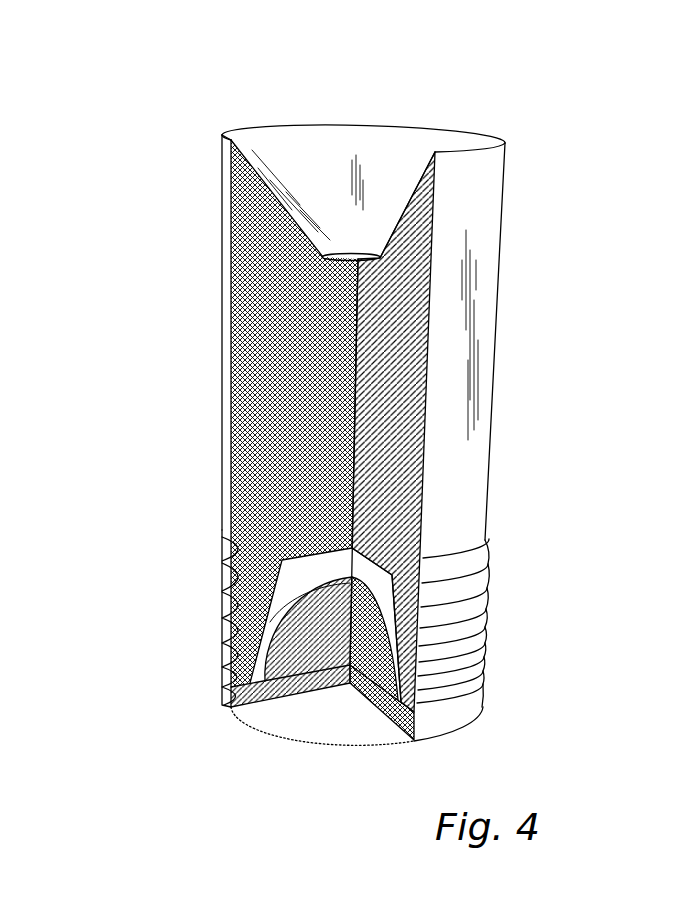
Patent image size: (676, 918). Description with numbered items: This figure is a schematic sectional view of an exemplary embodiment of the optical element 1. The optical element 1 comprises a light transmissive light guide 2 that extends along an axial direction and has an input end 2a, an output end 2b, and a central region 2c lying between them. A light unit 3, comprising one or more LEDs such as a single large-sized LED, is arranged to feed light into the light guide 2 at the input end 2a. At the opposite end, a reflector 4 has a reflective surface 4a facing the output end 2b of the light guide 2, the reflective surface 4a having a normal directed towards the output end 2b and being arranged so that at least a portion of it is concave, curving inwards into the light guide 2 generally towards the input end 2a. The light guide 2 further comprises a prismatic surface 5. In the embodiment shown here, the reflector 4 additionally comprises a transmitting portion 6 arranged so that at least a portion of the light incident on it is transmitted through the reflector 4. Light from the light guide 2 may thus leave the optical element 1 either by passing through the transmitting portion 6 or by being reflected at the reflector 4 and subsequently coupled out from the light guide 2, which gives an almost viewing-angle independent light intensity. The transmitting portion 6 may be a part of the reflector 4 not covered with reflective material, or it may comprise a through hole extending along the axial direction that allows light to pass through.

The optical element 1 is at (142, 117).
The light guide 2 is at (522, 302).
The input end 2a is at (227, 653).
The output end 2b is at (228, 183).
The central region 2c is at (468, 463).
The light unit 3 is at (318, 620).
The reflector 4 is at (306, 150).
The reflective surface 4a is at (230, 285).
The prismatic surface 5 is at (514, 611).
The transmitting portion 6 is at (374, 257).